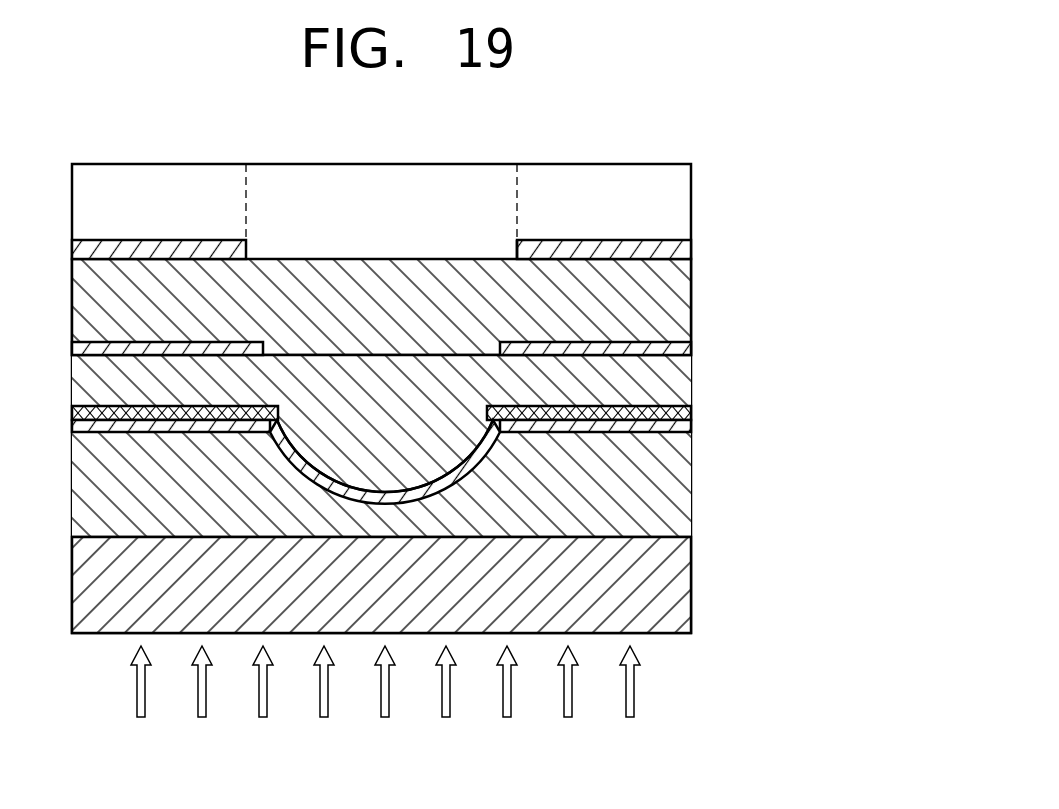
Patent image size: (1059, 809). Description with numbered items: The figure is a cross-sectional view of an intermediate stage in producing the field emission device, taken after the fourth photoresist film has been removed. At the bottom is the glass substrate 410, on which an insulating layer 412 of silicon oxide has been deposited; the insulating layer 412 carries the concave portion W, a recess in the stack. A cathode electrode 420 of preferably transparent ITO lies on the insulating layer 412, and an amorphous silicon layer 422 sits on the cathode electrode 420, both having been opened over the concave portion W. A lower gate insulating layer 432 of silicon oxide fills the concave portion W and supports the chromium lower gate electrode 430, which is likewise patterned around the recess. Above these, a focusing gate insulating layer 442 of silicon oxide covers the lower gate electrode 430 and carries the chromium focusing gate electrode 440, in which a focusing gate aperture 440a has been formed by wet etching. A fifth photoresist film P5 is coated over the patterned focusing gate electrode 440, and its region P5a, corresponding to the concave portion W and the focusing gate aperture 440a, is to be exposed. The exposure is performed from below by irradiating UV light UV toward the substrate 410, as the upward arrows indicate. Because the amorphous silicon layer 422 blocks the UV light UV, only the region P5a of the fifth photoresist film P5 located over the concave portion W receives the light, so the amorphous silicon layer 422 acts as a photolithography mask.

The fifth photoresist film P5 is at (691, 203).
The region of the fifth photoresist film P5a is at (405, 222).
The focusing gate aperture 440a is at (513, 238).
The focusing gate electrode 440 is at (691, 247).
The focusing gate insulating layer 442 is at (691, 298).
The lower gate electrode 430 is at (691, 343).
The lower gate insulating layer 432 is at (691, 380).
The amorphous silicon layer 422 is at (691, 412).
The cathode electrode 420 is at (691, 430).
The insulating layer 412 is at (691, 484).
The glass substrate 410 is at (691, 580).
The concave portion W is at (328, 478).
The UV light UV is at (634, 682).